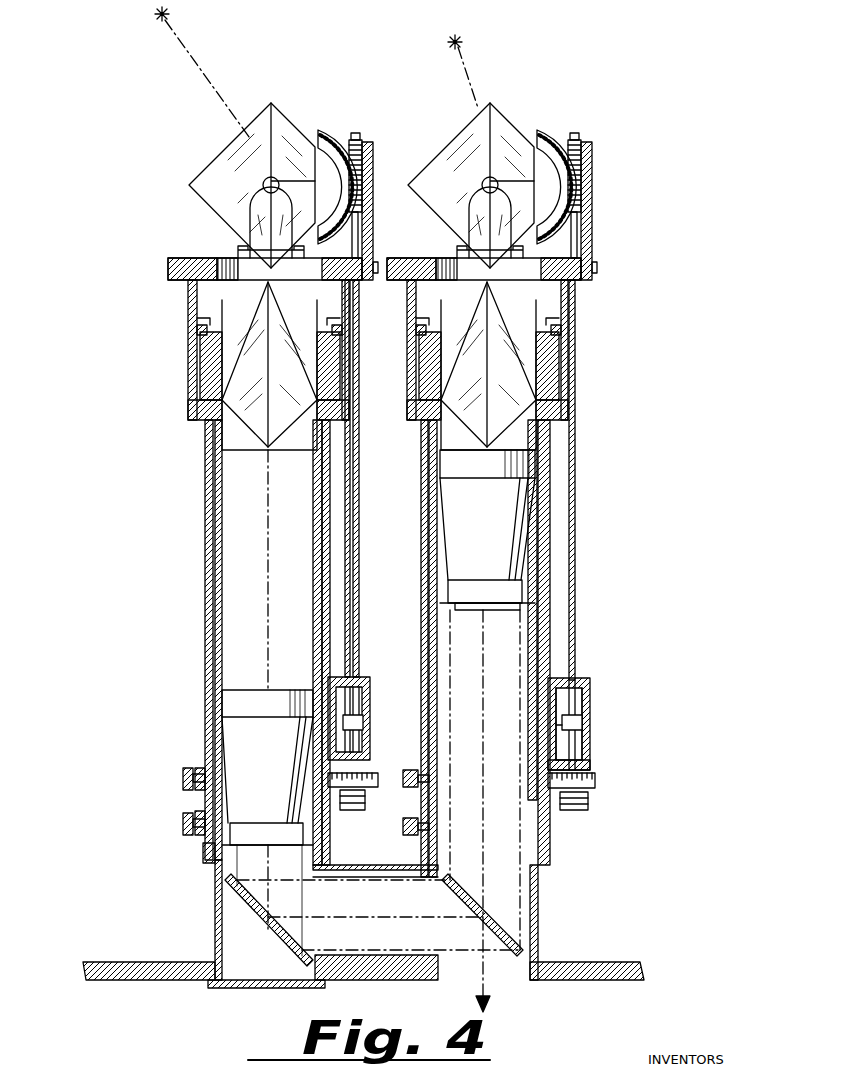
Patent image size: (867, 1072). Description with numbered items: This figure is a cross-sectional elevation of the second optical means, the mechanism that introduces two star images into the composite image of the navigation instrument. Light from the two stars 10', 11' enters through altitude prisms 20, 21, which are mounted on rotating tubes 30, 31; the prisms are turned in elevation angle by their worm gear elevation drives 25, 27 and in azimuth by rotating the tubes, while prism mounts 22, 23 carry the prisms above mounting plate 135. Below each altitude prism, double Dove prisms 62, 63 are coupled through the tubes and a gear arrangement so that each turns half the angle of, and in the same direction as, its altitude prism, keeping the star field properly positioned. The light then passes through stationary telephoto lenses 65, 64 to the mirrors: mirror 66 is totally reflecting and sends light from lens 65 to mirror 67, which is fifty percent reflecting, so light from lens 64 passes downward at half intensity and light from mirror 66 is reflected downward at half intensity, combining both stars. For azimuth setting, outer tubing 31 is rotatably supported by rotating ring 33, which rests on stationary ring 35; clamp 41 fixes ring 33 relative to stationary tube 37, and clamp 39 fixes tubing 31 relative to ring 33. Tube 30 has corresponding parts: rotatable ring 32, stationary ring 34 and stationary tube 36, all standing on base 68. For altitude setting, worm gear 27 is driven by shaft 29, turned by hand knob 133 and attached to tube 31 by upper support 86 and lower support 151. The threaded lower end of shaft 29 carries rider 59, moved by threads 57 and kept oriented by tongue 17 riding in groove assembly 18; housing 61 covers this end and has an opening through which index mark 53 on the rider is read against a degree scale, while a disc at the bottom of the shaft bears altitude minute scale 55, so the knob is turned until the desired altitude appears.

The star 10' is at (202, 72).
The star 11' is at (476, 62).
The altitude prism 20 is at (281, 112).
The altitude prism 21 is at (472, 174).
The prism mount 22 is at (233, 202).
The prism mount 23 is at (464, 217).
The worm gear elevation drive 25 is at (374, 160).
The worm gear 27 is at (583, 205).
The support 86 is at (594, 242).
The mounting plate 135 is at (597, 276).
The double Dove prism 62 is at (232, 420).
The double Dove prism 63 is at (474, 366).
The rotating tube 30 is at (205, 580).
The rotating tube 31 is at (422, 594).
The telephoto lens 64 is at (458, 540).
The telephoto lens 65 is at (242, 702).
The shaft 29 is at (577, 512).
The groove assembly 18 is at (562, 682).
The housing 61 is at (577, 690).
The threads 57 is at (588, 686).
The rider 59 is at (588, 716).
The index mark 53 is at (583, 728).
The tongue 17 is at (550, 740).
The support 151 is at (590, 767).
The altitude minute scale 55 is at (596, 778).
The hand knob 133 is at (590, 803).
The clamp 39 is at (410, 770).
The clamp 41 is at (410, 822).
The rotating ring 33 is at (412, 838).
The stationary ring 35 is at (422, 858).
The rotatable ring 32 is at (195, 828).
The stationary ring 34 is at (203, 853).
The stationary tube 36 is at (215, 890).
The mirror 66 is at (259, 914).
The mirror 67 is at (452, 882).
The stationary tube 37 is at (540, 896).
The base plate 68 is at (572, 964).